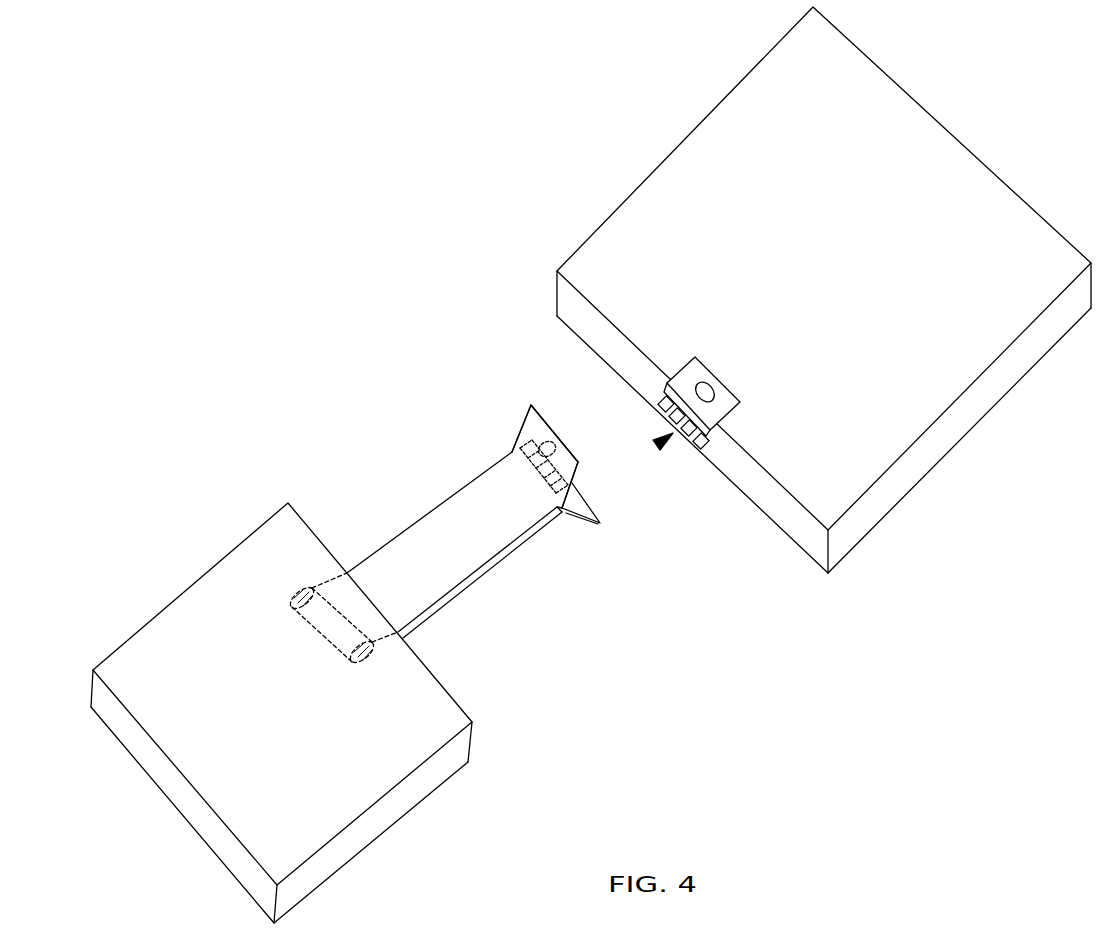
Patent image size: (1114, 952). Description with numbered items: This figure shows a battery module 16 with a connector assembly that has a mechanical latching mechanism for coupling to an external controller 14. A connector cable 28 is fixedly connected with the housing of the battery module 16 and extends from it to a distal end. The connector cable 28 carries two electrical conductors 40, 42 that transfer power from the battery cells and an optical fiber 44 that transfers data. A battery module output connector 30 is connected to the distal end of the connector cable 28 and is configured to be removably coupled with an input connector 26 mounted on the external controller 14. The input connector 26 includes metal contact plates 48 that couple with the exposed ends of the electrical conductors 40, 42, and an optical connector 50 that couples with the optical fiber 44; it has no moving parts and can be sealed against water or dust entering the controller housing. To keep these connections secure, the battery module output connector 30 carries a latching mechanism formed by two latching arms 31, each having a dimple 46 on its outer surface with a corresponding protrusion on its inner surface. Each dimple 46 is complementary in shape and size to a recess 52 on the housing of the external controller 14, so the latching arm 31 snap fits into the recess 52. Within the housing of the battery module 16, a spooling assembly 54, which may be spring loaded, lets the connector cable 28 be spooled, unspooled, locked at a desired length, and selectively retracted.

The external controller 14 is at (997, 174).
The battery module 16 is at (452, 695).
The input connector 26 is at (655, 448).
The connector cable 28 is at (453, 494).
The battery module output connector 30 is at (571, 518).
The latching arm 31 is at (593, 500).
The electrical conductor 40 is at (556, 507).
The electrical conductor 42 is at (522, 462).
The optical fiber 44 is at (555, 467).
The dimple 46 is at (549, 430).
The metal contact plate 48 is at (698, 445).
The optical connector 50 is at (677, 425).
The recess 52 is at (727, 386).
The spooling assembly 54 is at (373, 662).